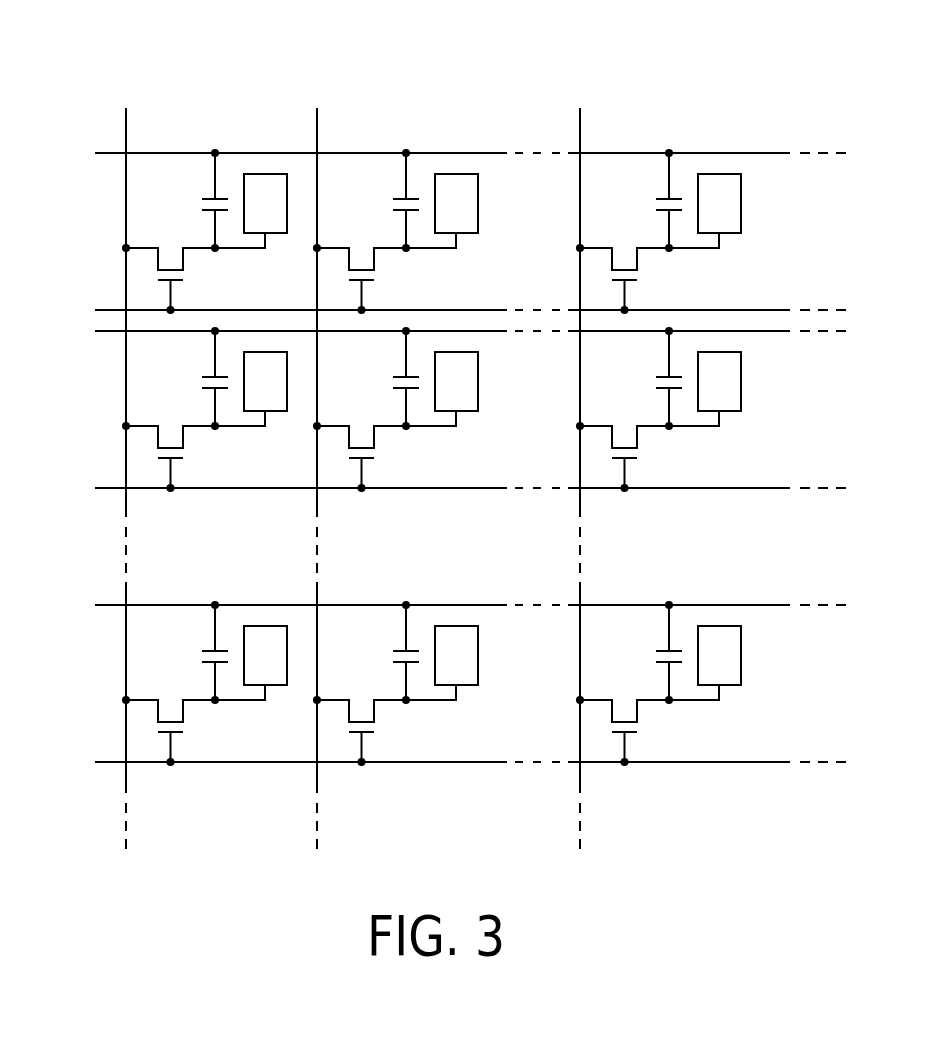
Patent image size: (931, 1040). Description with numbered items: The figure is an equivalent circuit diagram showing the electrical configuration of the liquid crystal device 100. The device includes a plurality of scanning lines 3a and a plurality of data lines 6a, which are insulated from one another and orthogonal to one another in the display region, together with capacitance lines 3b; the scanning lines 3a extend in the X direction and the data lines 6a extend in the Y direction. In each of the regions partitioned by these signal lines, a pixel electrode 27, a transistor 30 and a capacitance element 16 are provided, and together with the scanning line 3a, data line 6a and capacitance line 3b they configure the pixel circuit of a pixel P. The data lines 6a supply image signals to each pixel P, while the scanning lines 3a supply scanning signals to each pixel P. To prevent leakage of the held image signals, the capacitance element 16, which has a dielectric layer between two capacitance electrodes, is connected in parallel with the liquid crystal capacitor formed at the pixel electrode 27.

The liquid crystal device 100 is at (716, 84).
The capacitance line 3b is at (772, 152).
The scanning line 3a is at (772, 309).
The data line 6a is at (129, 124).
The capacitance element 16 is at (192, 200).
The pixel electrode 27 is at (272, 237).
The transistor 30 is at (192, 279).
The pixel P is at (771, 204).